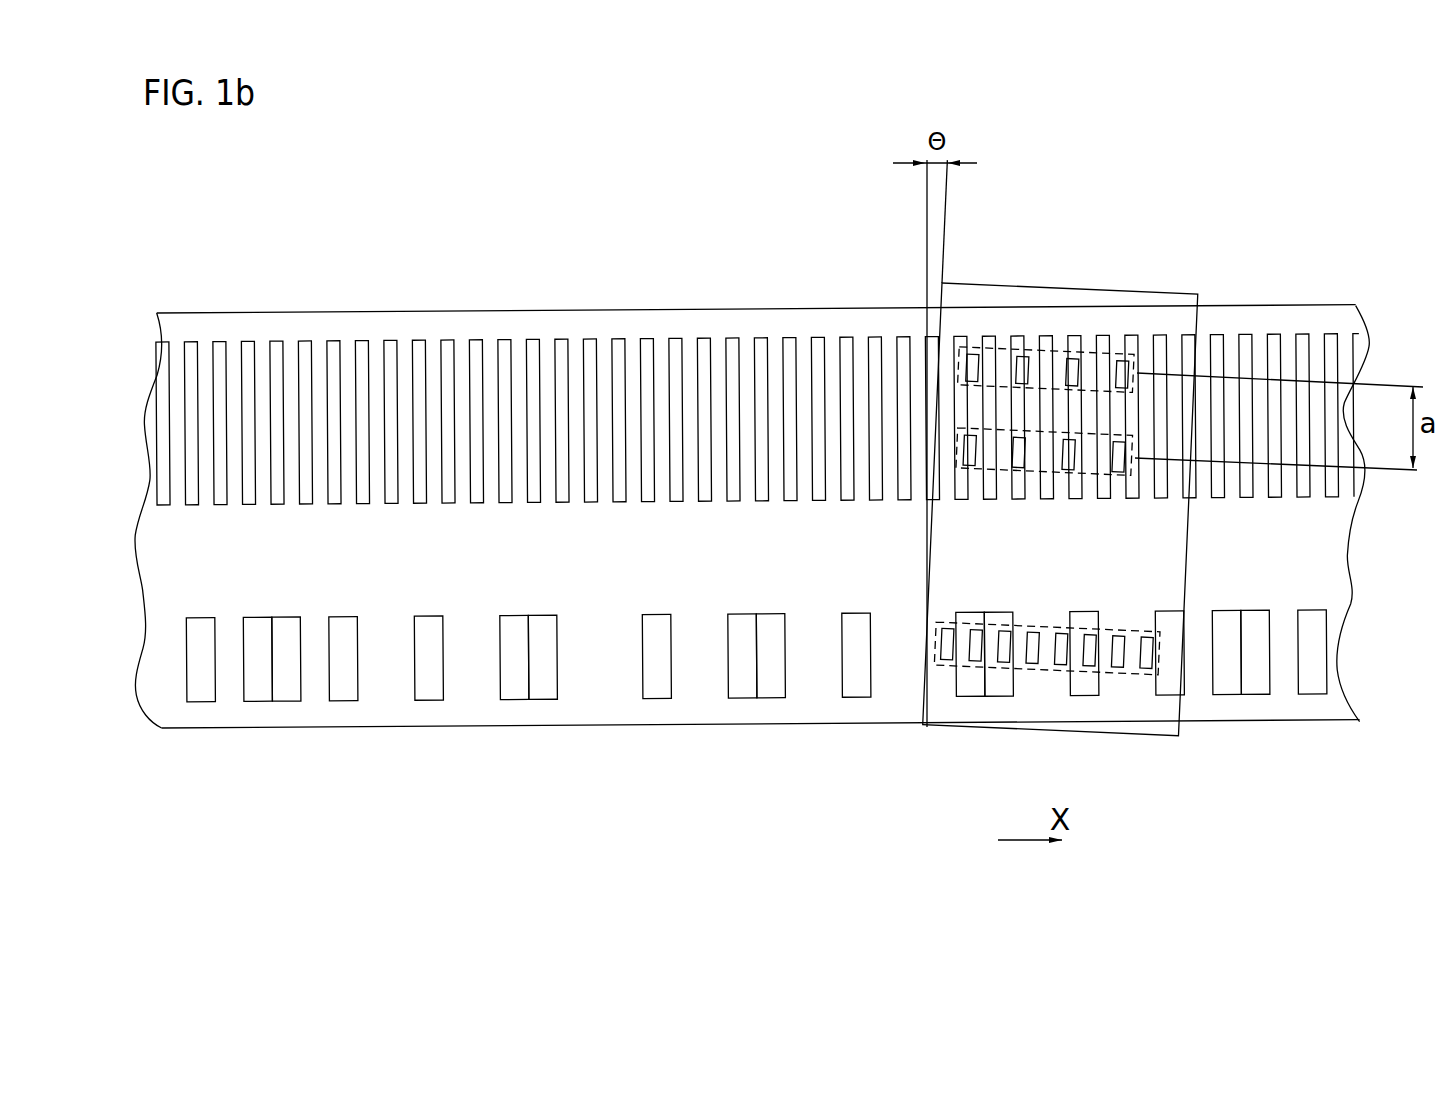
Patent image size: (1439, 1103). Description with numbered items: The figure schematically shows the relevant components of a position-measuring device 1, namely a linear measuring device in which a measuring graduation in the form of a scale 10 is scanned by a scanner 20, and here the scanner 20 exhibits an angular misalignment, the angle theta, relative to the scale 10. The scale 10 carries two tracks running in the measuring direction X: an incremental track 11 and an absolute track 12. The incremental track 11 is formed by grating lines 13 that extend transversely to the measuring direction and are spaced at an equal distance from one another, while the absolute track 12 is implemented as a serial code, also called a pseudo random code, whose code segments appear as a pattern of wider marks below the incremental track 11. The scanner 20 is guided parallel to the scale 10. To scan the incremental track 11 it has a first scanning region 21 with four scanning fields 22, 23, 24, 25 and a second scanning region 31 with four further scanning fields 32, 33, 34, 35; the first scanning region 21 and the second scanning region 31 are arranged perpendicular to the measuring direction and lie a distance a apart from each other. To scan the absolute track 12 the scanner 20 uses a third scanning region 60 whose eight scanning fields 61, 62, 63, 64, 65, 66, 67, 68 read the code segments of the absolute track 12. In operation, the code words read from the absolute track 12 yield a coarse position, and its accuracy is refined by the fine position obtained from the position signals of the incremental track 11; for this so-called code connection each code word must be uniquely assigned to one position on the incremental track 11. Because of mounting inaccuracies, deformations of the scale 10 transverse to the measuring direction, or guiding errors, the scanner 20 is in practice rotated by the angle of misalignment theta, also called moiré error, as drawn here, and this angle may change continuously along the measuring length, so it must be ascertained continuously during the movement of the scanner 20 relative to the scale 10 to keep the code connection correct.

The position-measuring device 1 is at (481, 268).
The scale 10 is at (603, 311).
The incremental track 11 is at (808, 364).
The absolute track 12 is at (817, 662).
The grating lines 13 is at (848, 351).
The scanner 20 is at (1186, 293).
The first scanning region 21 is at (1130, 352).
The scanning field 22 is at (972, 353).
The scanning field 23 is at (1022, 357).
The scanning field 24 is at (1070, 360).
The scanning field 25 is at (1120, 362).
The second scanning region 31 is at (1131, 460).
The scanning field 32 is at (969, 466).
The scanning field 33 is at (1017, 468).
The scanning field 34 is at (1068, 470).
The scanning field 35 is at (1118, 472).
The third scanning region 60 is at (940, 660).
The scanning field 61 is at (947, 662).
The scanning field 62 is at (976, 664).
The scanning field 63 is at (1004, 665).
The scanning field 64 is at (1033, 666).
The scanning field 65 is at (1062, 667).
The scanning field 66 is at (1090, 668).
The scanning field 67 is at (1119, 669).
The scanning field 68 is at (1148, 670).